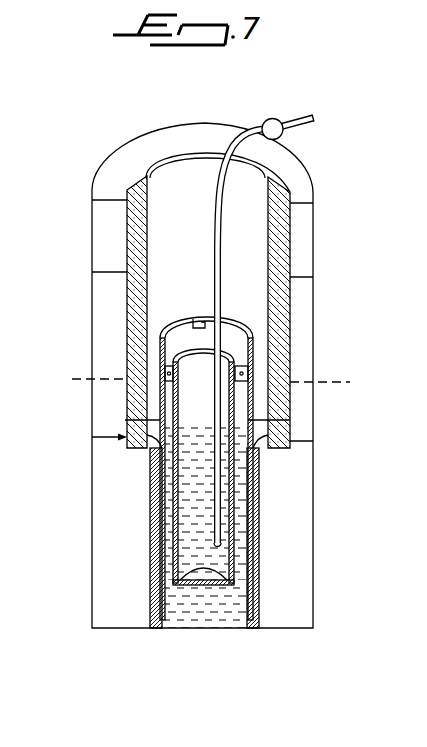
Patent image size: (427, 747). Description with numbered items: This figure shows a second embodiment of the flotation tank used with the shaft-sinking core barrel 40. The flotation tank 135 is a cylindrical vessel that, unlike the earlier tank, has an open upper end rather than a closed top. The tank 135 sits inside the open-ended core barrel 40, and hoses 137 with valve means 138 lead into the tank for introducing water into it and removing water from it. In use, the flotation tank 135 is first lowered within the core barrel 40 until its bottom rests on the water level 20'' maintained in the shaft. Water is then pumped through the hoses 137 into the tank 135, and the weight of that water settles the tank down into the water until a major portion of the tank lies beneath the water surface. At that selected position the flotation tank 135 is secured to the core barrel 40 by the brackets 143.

The hoses 137 is at (296, 116).
The valve means 138 is at (265, 120).
The brackets 143 is at (166, 383).
The water level 20'' is at (266, 468).
The flotation tank 135 is at (176, 416).
The core barrel 40 is at (256, 492).